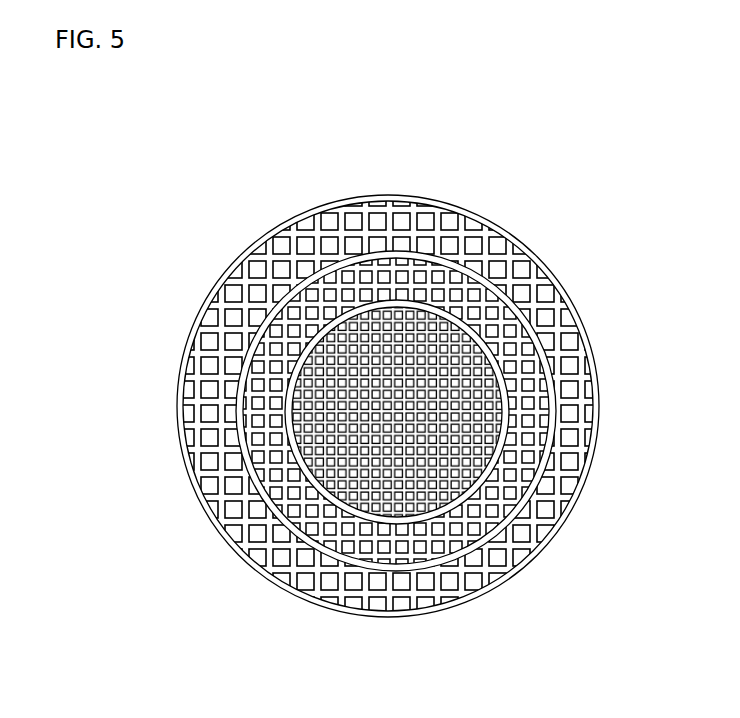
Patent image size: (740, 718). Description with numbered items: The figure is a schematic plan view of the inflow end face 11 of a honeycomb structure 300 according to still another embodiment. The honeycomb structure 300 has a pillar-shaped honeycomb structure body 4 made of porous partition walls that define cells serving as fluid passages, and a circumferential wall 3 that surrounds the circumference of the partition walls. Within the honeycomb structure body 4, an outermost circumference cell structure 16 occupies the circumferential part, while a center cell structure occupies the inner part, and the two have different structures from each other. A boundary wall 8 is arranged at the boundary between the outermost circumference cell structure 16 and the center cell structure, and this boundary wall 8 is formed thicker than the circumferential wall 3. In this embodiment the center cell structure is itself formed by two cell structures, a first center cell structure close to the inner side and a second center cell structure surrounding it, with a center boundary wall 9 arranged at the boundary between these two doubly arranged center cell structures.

The honeycomb structure 300 is at (679, 83).
The inflow end face 11 is at (232, 258).
The honeycomb structure body 4 is at (592, 480).
The circumferential wall 3 is at (570, 307).
The boundary wall 8 is at (237, 373).
The center boundary wall 9 is at (503, 415).
The outermost circumference cell structure 16 is at (397, 595).